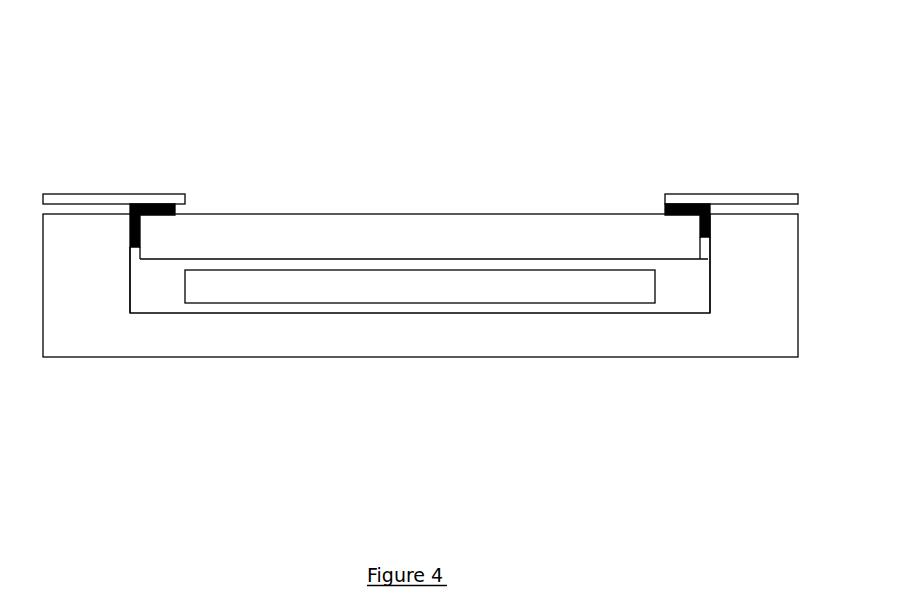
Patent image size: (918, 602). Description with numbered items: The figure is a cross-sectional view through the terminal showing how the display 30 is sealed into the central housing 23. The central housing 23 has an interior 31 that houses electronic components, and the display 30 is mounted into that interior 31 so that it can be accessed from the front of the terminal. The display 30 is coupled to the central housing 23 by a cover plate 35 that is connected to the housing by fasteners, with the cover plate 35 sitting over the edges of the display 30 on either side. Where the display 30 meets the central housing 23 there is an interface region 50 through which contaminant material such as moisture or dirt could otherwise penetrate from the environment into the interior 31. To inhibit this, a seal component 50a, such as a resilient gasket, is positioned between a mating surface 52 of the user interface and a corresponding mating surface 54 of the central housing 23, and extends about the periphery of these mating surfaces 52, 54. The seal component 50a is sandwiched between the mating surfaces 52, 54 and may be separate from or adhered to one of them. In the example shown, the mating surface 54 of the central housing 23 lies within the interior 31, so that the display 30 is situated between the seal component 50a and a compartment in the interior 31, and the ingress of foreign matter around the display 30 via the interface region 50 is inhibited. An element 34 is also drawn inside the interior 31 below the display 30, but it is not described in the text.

The central housing 23 is at (532, 338).
The display 30 is at (463, 228).
The interior 31 is at (152, 280).
The inner element 34 is at (353, 292).
The cover plate 35 is at (698, 193).
The interface region 50 is at (703, 258).
The seal component 50a is at (140, 205).
The mating surface of the user interface 52 is at (141, 250).
The mating surface of the central housing 54 is at (131, 250).